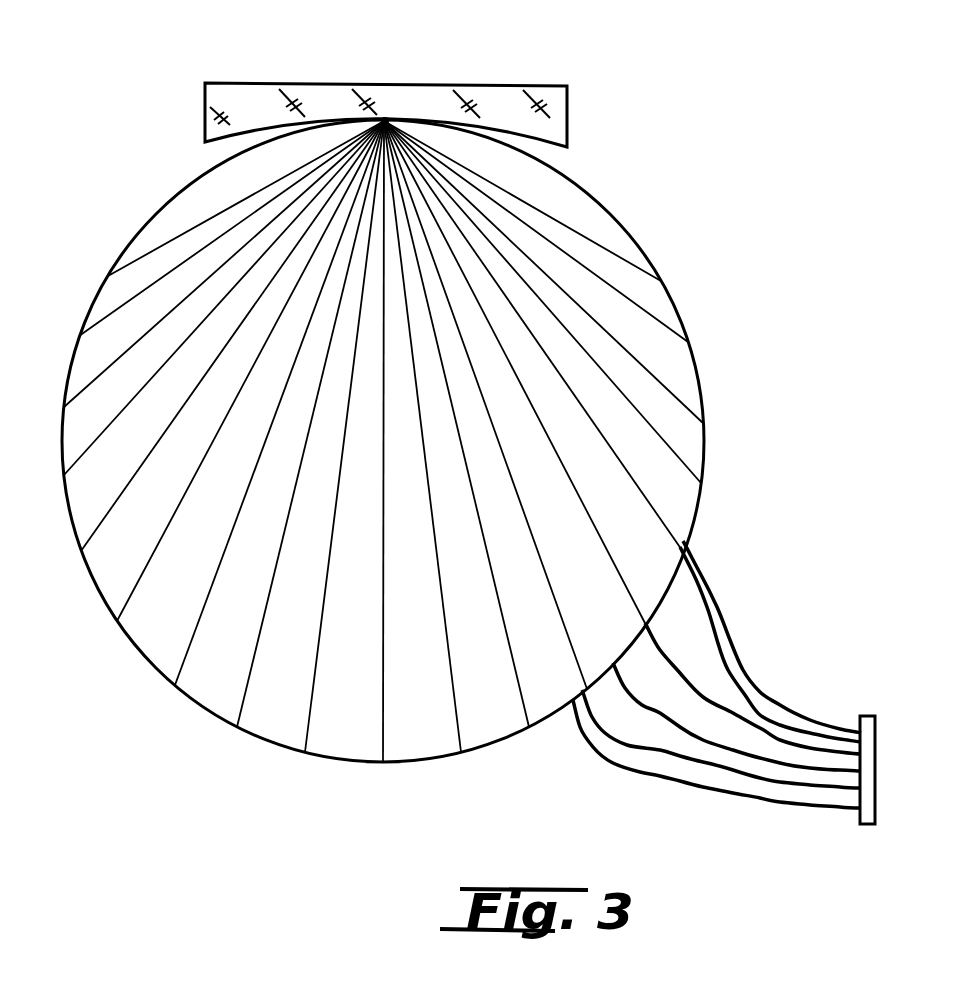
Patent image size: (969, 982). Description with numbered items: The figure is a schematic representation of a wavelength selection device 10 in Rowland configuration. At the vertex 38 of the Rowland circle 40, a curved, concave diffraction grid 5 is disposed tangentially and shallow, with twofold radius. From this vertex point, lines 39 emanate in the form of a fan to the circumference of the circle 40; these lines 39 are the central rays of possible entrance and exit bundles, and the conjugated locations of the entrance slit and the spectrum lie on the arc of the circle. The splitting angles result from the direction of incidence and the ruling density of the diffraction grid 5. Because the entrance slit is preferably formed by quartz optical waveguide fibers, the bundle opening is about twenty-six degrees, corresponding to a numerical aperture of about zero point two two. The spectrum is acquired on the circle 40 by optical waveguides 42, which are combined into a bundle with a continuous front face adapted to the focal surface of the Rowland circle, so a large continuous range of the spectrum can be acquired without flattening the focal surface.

The wavelength selection device 10 is at (690, 180).
The diffraction grid 5 is at (516, 103).
The vertex 38 is at (386, 120).
The lines 39 is at (640, 303).
The Rowland circle 40 is at (692, 517).
The optical waveguides 42 is at (747, 680).